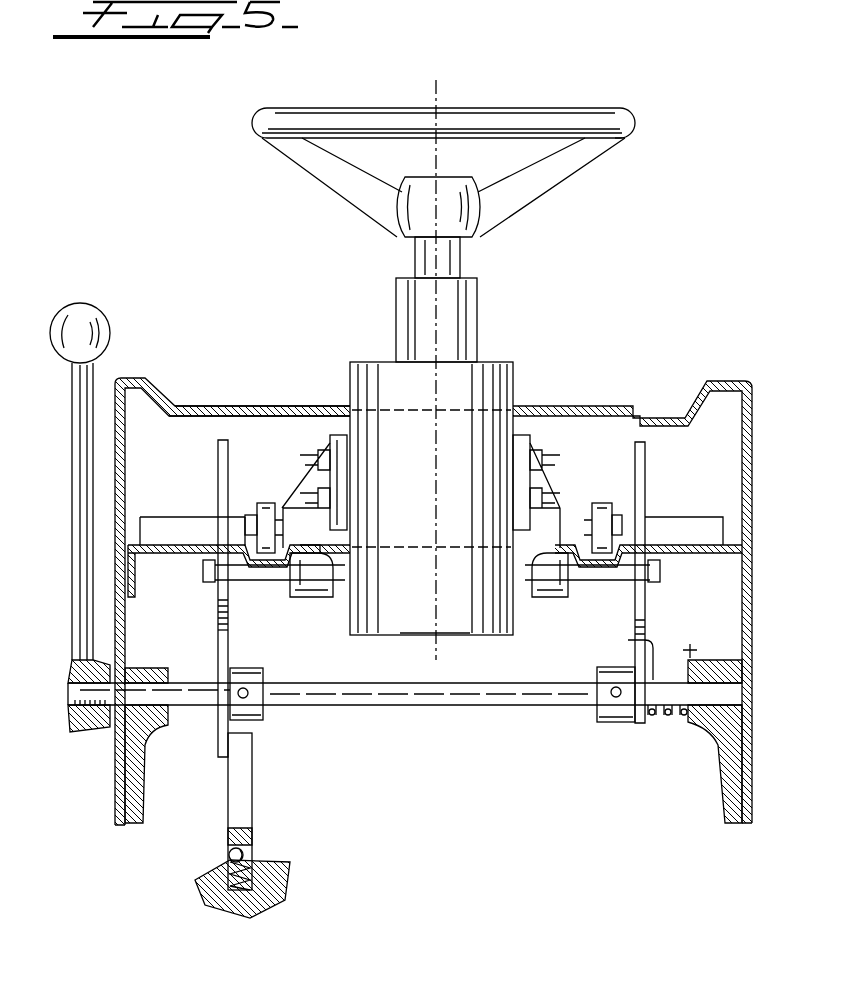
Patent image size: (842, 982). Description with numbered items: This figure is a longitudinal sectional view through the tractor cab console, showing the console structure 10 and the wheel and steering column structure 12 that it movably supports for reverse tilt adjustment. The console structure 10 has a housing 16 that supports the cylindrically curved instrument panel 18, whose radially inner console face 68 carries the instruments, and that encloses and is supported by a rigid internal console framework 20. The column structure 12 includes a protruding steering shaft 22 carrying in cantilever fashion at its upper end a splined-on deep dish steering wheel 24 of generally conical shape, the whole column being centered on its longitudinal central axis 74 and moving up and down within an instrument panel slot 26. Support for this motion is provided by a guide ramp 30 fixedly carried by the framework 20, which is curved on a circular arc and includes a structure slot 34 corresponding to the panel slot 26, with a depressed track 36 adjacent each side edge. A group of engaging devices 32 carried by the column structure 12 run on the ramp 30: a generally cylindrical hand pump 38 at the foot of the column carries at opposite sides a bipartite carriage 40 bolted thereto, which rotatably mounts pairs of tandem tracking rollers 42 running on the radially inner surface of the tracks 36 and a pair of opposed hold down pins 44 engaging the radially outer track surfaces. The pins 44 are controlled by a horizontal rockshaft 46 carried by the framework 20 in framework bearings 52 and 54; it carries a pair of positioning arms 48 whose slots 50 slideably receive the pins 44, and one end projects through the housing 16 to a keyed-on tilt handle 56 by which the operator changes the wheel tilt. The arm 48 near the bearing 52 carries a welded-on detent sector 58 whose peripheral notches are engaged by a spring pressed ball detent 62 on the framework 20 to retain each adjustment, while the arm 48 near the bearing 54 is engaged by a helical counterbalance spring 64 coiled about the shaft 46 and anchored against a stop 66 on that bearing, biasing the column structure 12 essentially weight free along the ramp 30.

The console structure 10 is at (752, 540).
The wheel and steering column structure 12 is at (573, 178).
The housing 16 is at (135, 380).
The instrument panel 18 is at (178, 408).
The console framework 20 is at (130, 597).
The steering shaft 22 is at (470, 258).
The steering wheel 24 is at (627, 133).
The instrument panel slot 26 is at (345, 400).
The guide ramp 30 is at (147, 545).
The engaging devices 32 is at (212, 565).
The structure slot 34 is at (312, 553).
The depressed track 36 is at (233, 575).
The hand pump 38 is at (475, 625).
The bipartite carriage 40 is at (325, 437).
The tandem tracking rollers 42 is at (265, 503).
The hold down pins 44 is at (305, 580).
The rockshaft 46 is at (400, 705).
The positioning arms 48 is at (228, 660).
The slots 50 is at (222, 628).
The framework bearing 52 is at (150, 720).
The framework bearing 54 is at (700, 715).
The tilt handle 56 is at (80, 500).
The detent sector 58 is at (250, 810).
The ball detent 62 is at (232, 850).
The counterbalance spring 64 is at (665, 715).
The stop 66 is at (690, 650).
The console face 68 is at (245, 408).
The longitudinal central axis 74 is at (440, 340).